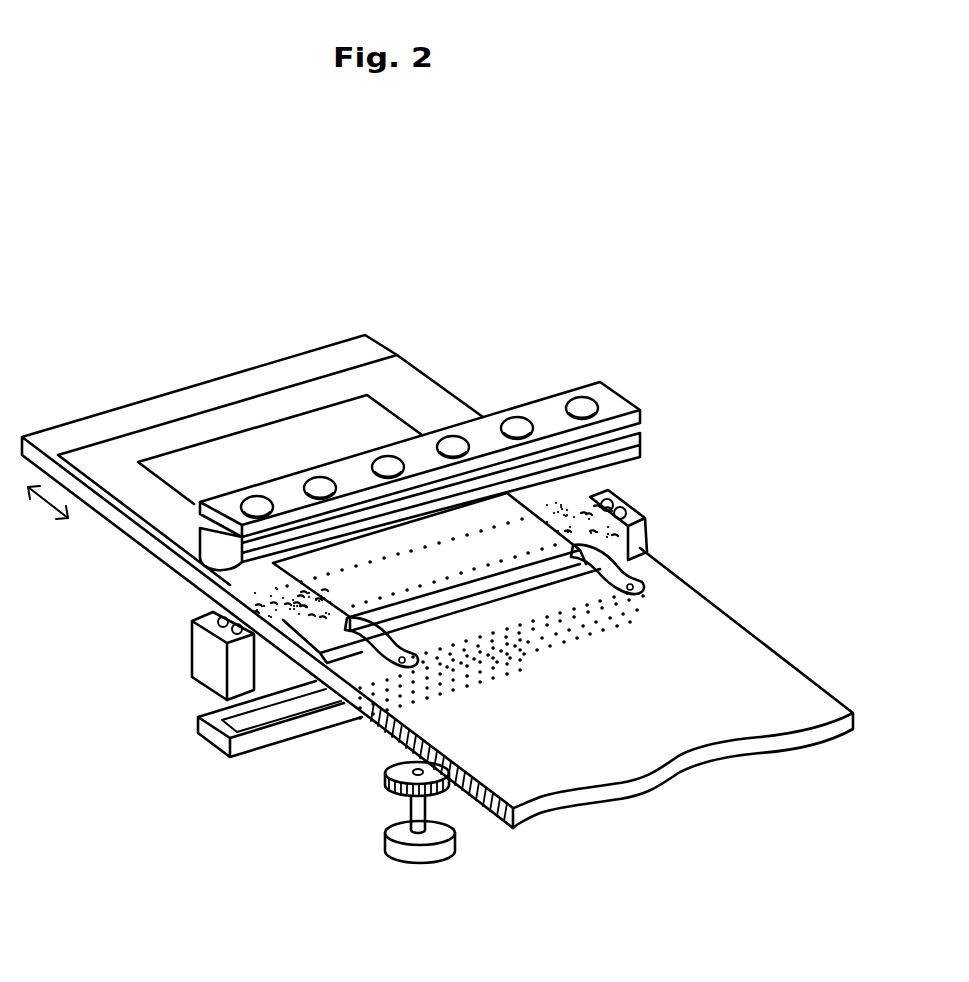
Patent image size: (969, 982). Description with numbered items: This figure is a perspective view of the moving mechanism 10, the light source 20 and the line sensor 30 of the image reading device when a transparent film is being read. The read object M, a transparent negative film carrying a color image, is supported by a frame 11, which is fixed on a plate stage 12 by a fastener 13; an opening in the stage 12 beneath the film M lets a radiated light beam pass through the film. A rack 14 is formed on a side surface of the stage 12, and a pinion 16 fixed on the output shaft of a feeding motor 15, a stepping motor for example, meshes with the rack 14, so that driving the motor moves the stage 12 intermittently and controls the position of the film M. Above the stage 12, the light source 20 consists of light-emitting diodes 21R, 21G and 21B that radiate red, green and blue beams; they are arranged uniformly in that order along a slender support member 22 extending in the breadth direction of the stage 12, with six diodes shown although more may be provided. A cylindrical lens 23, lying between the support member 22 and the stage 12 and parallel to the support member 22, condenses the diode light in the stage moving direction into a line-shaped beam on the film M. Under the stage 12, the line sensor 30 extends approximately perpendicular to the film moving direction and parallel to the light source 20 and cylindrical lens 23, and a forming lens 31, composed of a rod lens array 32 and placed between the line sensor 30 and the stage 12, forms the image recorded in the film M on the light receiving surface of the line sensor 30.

The moving mechanism 10 is at (366, 842).
The frame 11 is at (160, 427).
The plate stage 12 is at (778, 655).
The fastener 13 is at (665, 574).
The rack 14 is at (498, 822).
The feeding motor 15 is at (366, 836).
The pinion 16 is at (388, 769).
The light source 20 is at (457, 441).
The light-emitting diode 21B is at (455, 436).
The light-emitting diode 21G is at (518, 417).
The light-emitting diode 21R is at (583, 397).
The support member 22 is at (625, 400).
The cylindrical lens 23 is at (640, 437).
The line sensor 30 is at (197, 726).
The forming lens 31 is at (645, 510).
The rod lens array 32 is at (192, 623).
The read object M is at (263, 433).